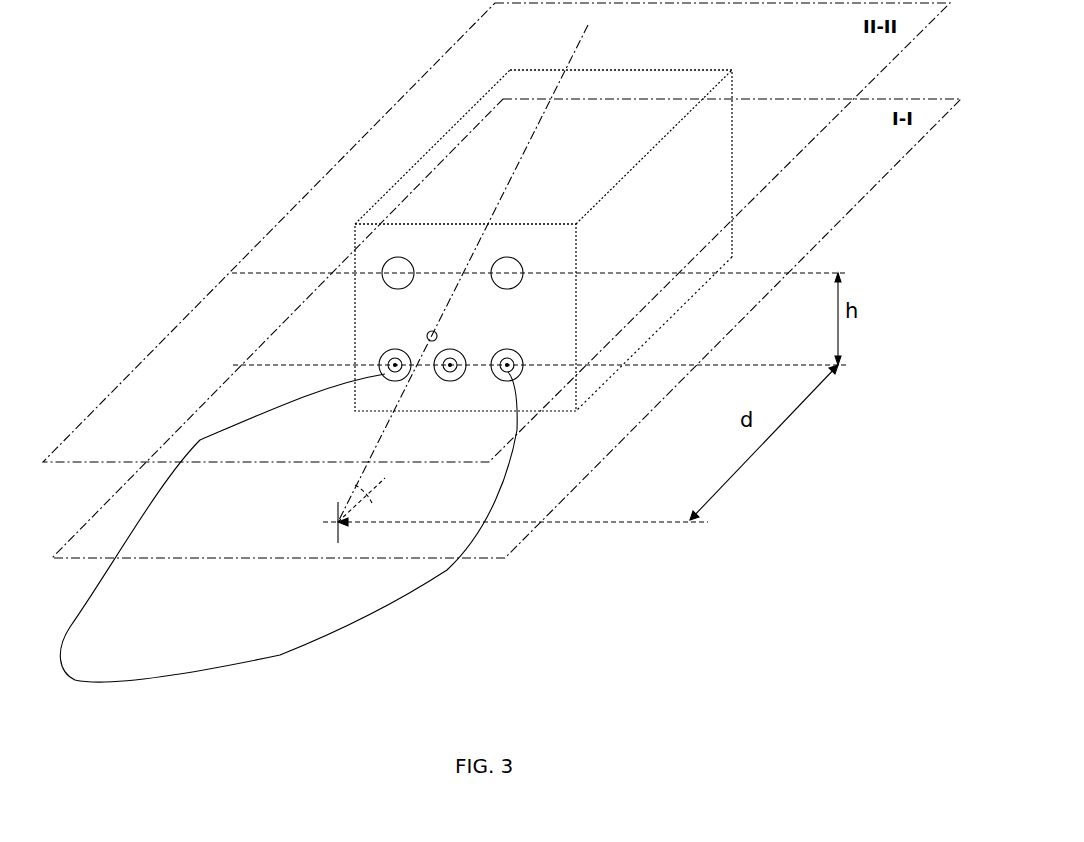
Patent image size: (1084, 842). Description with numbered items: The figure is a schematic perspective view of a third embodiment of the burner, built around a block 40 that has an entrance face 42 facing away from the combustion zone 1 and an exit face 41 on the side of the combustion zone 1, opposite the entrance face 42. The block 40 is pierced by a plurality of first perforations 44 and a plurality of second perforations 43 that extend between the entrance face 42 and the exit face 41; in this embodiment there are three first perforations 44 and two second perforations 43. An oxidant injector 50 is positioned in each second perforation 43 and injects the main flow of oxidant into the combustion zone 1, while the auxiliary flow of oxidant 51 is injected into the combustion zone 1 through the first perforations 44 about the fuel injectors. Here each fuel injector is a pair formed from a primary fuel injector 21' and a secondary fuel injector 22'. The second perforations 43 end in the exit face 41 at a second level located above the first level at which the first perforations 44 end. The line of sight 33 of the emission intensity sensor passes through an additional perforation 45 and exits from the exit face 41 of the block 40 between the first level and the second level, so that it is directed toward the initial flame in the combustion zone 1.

The combustion zone 1 is at (288, 527).
The line of sight 33 is at (575, 52).
The block 40 is at (700, 200).
The exit face 41 is at (453, 237).
The entrance face 42 is at (684, 70).
The second perforation 43 is at (388, 289).
The first perforation 44 is at (400, 353).
The additional perforation 45 is at (433, 330).
The oxidant injector 50 is at (393, 274).
The auxiliary flow of oxidant 51 is at (390, 358).
The primary fuel injector 21' is at (401, 405).
The secondary fuel injector 22' is at (464, 421).